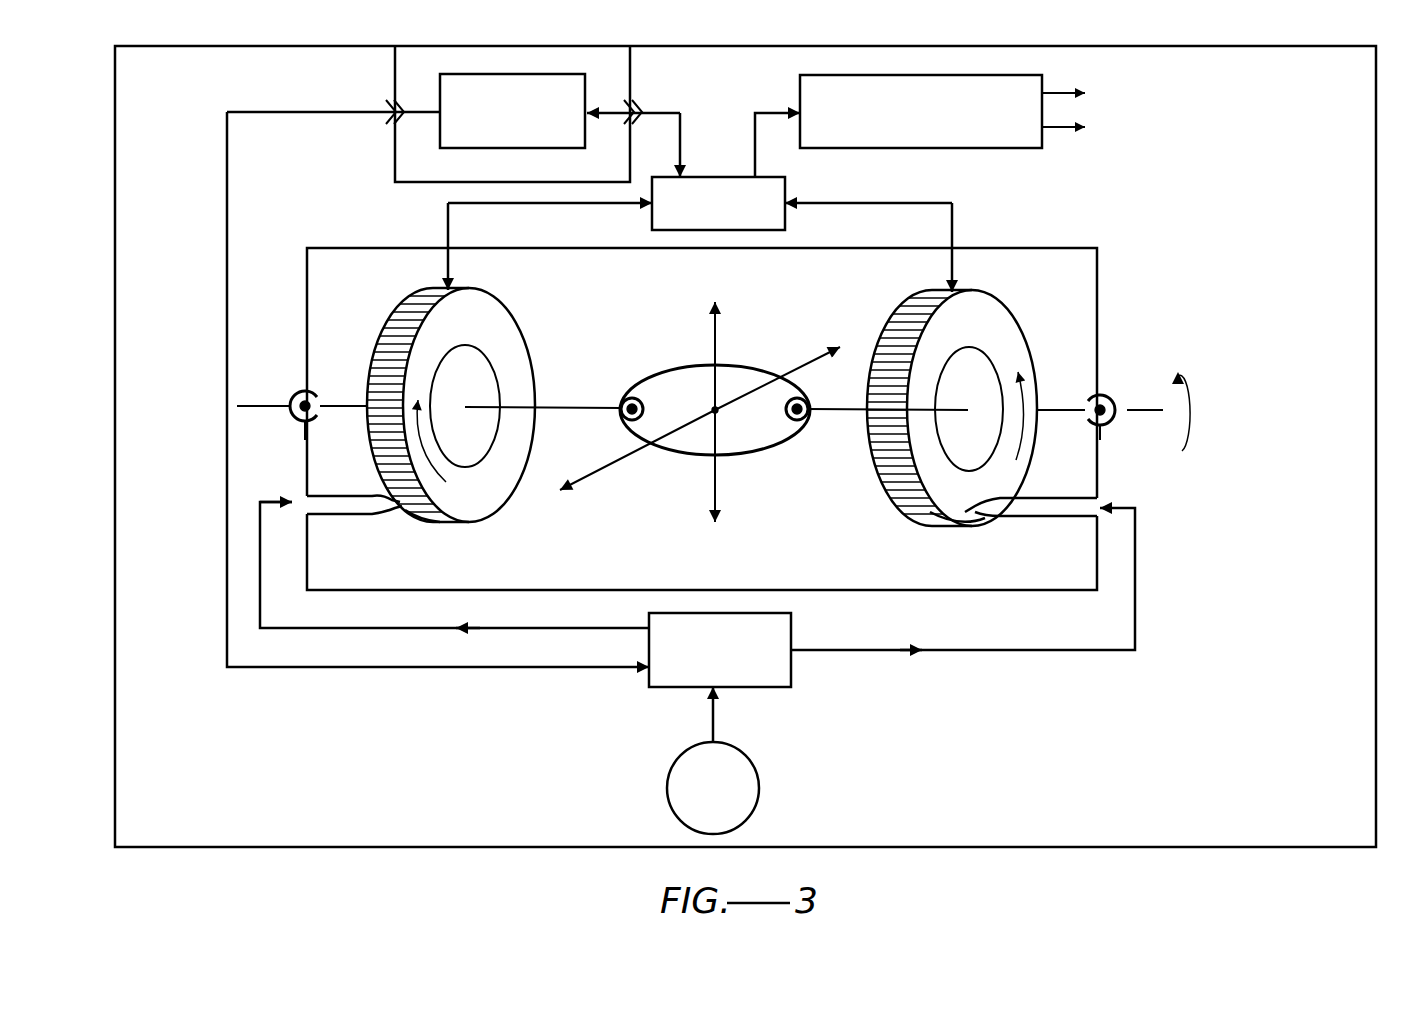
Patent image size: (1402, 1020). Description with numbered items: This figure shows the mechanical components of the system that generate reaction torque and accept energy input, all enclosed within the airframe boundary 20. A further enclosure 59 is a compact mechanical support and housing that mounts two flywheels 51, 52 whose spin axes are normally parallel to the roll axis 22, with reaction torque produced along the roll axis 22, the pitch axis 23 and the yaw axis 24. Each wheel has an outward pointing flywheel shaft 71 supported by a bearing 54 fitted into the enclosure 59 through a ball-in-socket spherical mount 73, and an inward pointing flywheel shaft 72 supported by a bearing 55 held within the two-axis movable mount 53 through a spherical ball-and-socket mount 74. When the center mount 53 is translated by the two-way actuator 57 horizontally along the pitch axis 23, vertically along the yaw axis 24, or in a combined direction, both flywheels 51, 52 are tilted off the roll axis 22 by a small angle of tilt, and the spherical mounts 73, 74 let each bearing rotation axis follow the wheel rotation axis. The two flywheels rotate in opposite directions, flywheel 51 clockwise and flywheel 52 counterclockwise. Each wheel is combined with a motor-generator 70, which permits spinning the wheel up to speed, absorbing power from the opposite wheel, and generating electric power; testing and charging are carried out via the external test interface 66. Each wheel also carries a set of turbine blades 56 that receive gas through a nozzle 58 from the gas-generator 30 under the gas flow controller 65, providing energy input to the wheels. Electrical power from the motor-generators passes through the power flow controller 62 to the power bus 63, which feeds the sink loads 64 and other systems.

The airframe boundary 20 is at (1190, 46).
The roll axis 22 is at (707, 411).
The pitch axis 23 is at (637, 465).
The yaw axis 24 is at (777, 410).
The gas-generator 30 is at (726, 760).
The flywheel 51 is at (490, 318).
The flywheel 52 is at (985, 408).
The 2-axis movable mount 53 is at (772, 447).
The flywheel shaft support bearing 54 is at (702, 396).
The flywheel shaft support bearing 55 is at (620, 398).
The turbine blades 56 is at (395, 320).
The 2-way actuator 57 is at (770, 507).
The nozzle 58 is at (702, 526).
The enclosure 59 is at (1097, 300).
The power flow controller 62 is at (718, 203).
The power bus 63 is at (921, 111).
The sink loads 64 is at (1146, 129).
The gas flow controller 65 is at (697, 596).
The external test interface 66 is at (512, 128).
The motor-generator 70 is at (1028, 302).
The outward pointing flywheel shaft 71 is at (345, 406).
The inward pointing flywheel shaft 72 is at (598, 408).
The ball-in-socket spherical mount 73 is at (702, 442).
The spherical ball-and-socket mount 74 is at (718, 398).